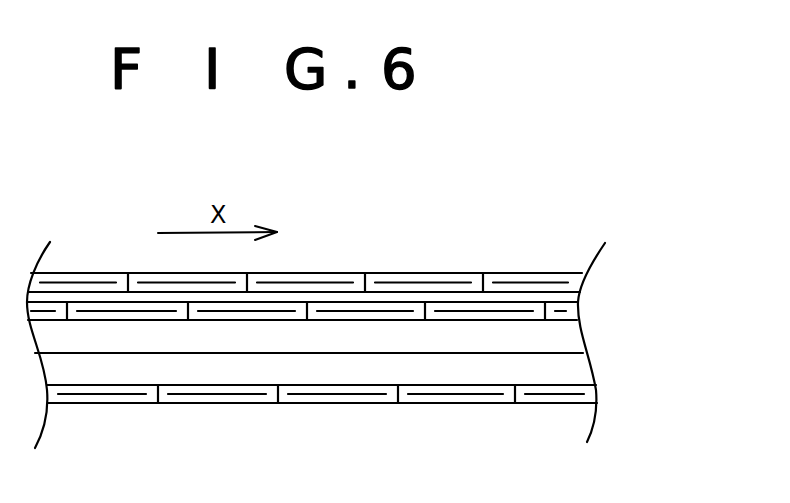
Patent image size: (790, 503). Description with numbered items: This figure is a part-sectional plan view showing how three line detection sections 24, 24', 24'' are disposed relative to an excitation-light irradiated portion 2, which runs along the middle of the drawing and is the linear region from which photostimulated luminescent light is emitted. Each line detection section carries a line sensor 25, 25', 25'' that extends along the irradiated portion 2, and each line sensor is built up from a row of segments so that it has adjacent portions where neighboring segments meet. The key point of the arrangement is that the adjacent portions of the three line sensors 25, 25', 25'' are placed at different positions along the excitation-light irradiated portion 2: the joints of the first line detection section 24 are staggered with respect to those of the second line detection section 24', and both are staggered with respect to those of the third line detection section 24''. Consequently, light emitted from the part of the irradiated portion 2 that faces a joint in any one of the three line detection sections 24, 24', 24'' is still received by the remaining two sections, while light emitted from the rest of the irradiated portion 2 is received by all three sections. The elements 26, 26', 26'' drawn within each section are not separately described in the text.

The excitation-light irradiated portion 2 is at (553, 352).
The line detection section 24 is at (319, 244).
The line sensor 25 is at (305, 244).
The internal electrode strip 26 is at (304, 240).
The line detection section 24' is at (353, 299).
The line sensor 25' is at (306, 327).
The internal electrode strip (second layer) 26' is at (355, 332).
The line detection section 24'' is at (322, 429).
The line sensor 25'' is at (336, 429).
The internal electrode strip (third layer) 26'' is at (321, 433).